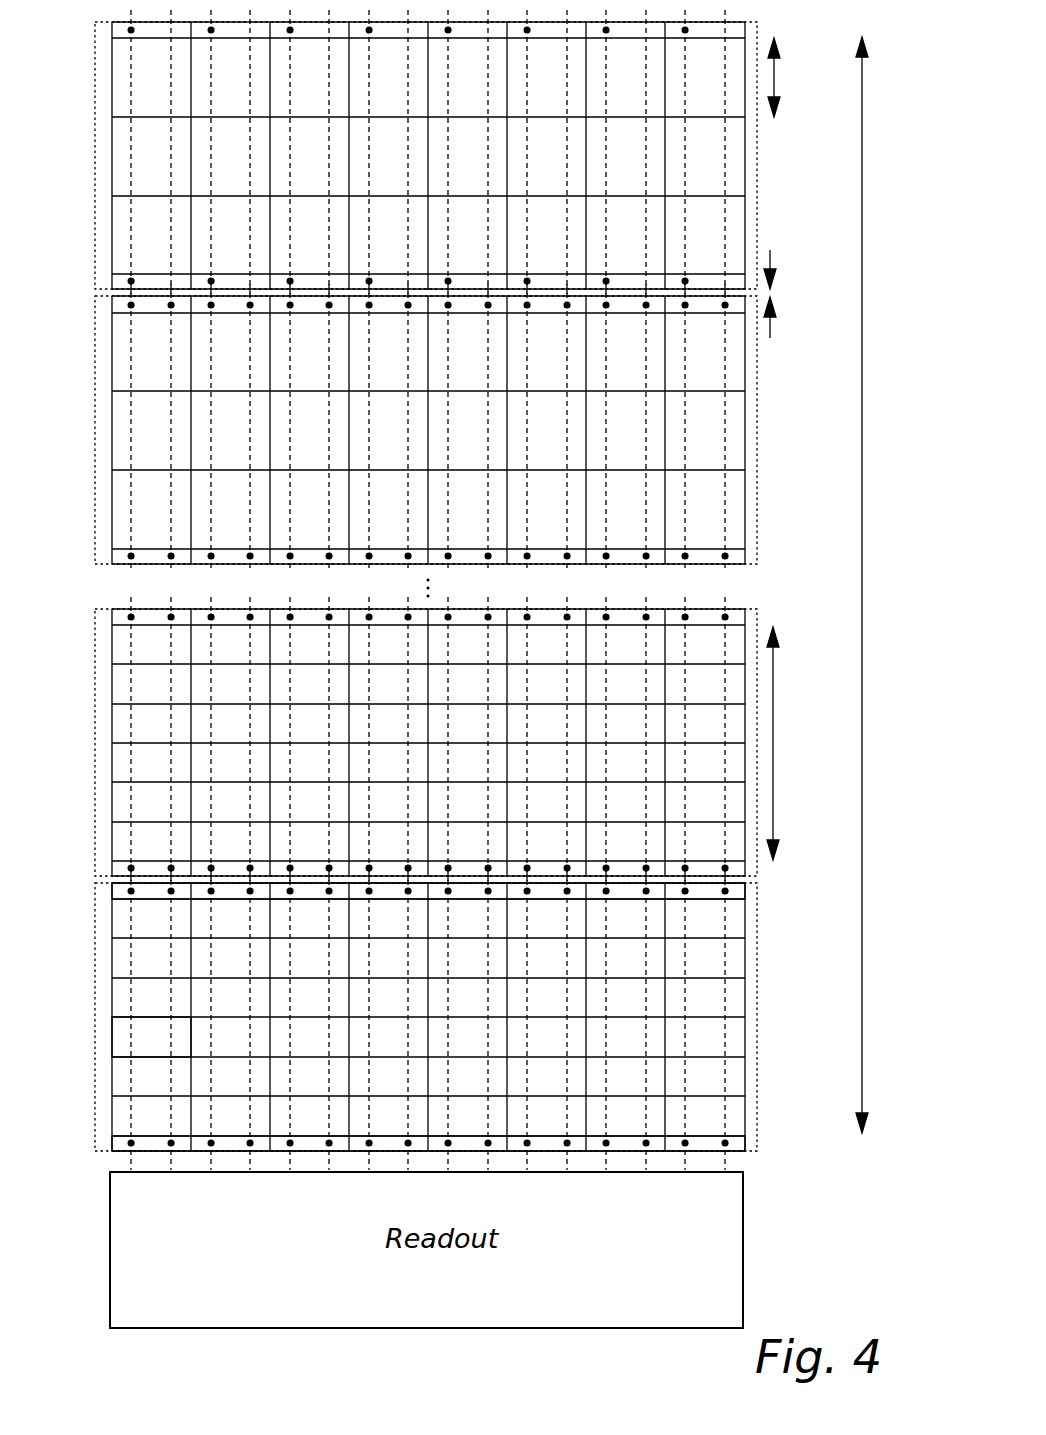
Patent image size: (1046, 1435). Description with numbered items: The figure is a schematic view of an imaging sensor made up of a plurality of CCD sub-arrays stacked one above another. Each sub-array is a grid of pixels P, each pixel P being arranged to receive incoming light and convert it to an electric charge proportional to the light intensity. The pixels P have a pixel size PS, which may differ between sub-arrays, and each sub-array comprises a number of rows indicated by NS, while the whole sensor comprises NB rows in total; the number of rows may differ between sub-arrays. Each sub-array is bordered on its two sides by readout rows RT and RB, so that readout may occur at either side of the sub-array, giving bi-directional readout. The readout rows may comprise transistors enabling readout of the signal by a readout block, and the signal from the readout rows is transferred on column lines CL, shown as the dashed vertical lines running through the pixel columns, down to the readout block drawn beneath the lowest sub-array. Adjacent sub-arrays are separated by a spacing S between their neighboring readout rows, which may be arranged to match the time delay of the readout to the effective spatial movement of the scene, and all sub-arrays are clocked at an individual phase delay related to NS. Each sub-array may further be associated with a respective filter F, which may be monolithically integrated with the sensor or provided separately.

The filter F is at (104, 772).
The pixel P is at (122, 1040).
The top readout row RT is at (115, 891).
The bottom readout row RB is at (115, 1143).
The column lines CL is at (130, 1160).
The pixel size PS is at (792, 77).
The spacing S is at (779, 294).
The number of rows per sub-array NS is at (792, 743).
The total number of rows NB is at (881, 585).